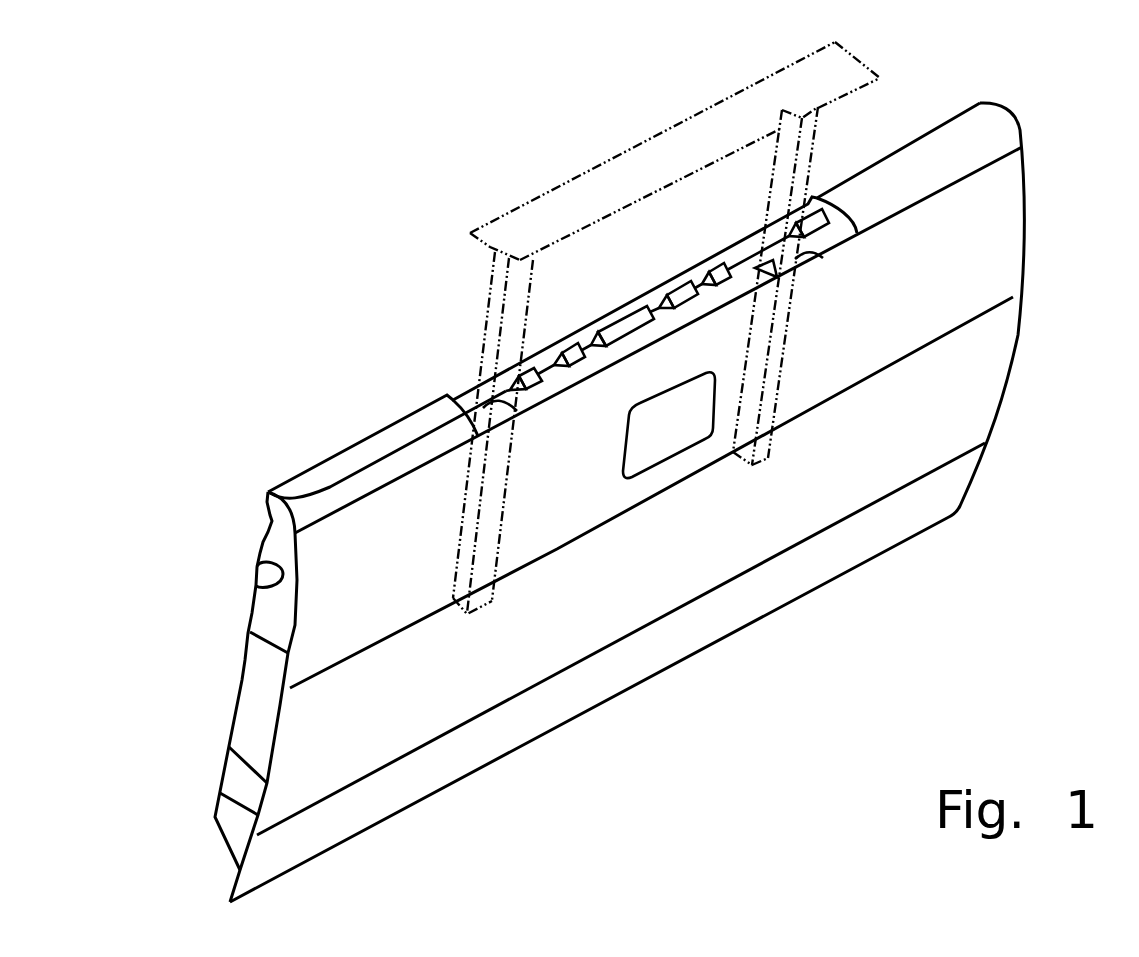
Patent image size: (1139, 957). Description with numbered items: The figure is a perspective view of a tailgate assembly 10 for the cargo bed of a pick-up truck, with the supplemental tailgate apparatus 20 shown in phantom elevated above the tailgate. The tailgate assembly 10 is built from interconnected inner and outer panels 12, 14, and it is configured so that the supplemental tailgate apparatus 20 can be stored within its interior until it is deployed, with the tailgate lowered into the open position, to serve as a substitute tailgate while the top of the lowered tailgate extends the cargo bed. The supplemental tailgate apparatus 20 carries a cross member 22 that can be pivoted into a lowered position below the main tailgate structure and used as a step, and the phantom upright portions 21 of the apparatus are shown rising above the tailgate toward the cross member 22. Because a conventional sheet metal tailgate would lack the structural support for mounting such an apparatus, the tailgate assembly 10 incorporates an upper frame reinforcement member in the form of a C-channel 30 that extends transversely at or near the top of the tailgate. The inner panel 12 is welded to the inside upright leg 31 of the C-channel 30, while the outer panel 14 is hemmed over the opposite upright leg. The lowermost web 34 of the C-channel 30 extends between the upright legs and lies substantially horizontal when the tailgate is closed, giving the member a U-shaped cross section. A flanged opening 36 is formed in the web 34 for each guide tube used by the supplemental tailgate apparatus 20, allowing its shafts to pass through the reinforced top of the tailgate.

The tailgate assembly 10 is at (619, 502).
The inner panel 12 is at (242, 657).
The outer panel 14 is at (982, 397).
The supplemental tailgate apparatus 20 is at (675, 328).
The posts 21 is at (487, 323).
The cross member 22 is at (630, 152).
The C-channel 30 is at (657, 305).
The inside upright leg 31 is at (462, 395).
The web 34 is at (843, 233).
The flanged opening 36 is at (513, 407).